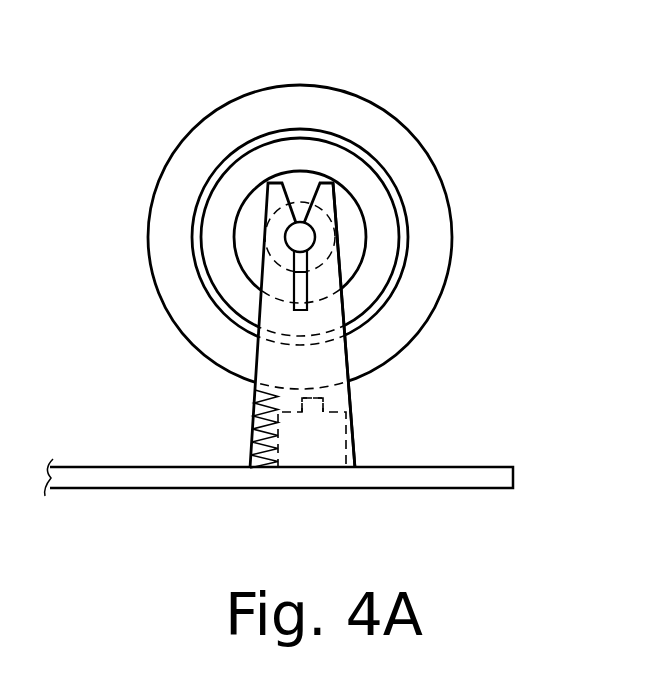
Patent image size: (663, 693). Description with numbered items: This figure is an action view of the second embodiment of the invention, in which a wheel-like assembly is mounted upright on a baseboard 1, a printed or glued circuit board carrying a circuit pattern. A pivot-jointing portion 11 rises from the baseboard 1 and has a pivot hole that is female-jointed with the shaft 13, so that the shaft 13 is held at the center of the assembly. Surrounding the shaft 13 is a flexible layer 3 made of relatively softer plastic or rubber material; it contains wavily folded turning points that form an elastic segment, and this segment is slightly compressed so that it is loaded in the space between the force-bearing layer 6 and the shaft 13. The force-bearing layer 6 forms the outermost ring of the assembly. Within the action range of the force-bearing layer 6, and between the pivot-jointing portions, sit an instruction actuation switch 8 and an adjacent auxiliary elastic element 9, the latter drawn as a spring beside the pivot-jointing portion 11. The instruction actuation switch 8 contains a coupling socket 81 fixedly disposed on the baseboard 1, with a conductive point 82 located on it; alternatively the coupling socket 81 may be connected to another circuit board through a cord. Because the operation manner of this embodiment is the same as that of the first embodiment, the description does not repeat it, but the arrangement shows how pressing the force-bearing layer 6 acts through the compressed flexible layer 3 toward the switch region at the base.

The baseboard 1 is at (137, 475).
The flexible layer 3 is at (333, 155).
The force-bearing layer 6 is at (427, 174).
The instruction actuation switch 8 is at (351, 451).
The coupling socket 81 is at (300, 457).
The conductive point 82 is at (320, 397).
The auxiliary elastic element 9 is at (253, 433).
The pivot-jointing portion 11 is at (354, 417).
The shaft 13 is at (305, 240).